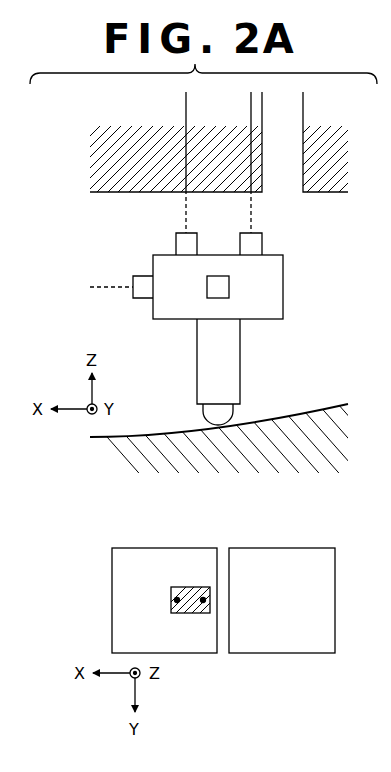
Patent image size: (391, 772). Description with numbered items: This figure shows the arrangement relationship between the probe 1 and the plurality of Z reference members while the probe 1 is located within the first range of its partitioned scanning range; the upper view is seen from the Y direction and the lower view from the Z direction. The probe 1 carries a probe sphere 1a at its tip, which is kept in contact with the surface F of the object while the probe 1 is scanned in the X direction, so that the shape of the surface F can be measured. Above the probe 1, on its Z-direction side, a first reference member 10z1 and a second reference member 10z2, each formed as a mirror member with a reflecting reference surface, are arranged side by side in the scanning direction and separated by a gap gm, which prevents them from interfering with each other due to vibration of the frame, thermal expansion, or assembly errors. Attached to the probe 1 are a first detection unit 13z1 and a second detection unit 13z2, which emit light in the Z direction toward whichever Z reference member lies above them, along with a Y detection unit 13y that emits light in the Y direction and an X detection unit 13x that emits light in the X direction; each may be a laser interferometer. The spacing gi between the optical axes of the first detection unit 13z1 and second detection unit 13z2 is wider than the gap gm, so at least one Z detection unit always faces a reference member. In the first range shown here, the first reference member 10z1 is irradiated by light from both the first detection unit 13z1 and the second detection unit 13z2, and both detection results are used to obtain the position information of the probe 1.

The probe 1 is at (240, 356).
The probe sphere 1a is at (233, 415).
The surface of the object F is at (157, 435).
The first reference member 10z1 is at (120, 192).
The second reference member 10z2 is at (322, 192).
The X detection unit 13x is at (133, 292).
The Y detection unit 13y is at (229, 287).
The first detection unit 13z1 is at (176, 243).
The second detection unit 13z2 is at (262, 243).
The spacing between optical axes gi is at (250, 111).
The gap gm is at (302, 111).